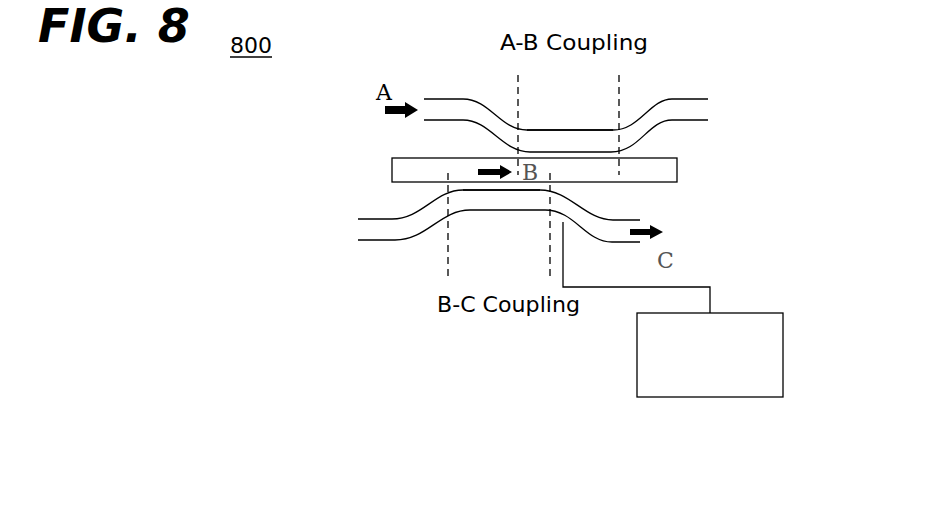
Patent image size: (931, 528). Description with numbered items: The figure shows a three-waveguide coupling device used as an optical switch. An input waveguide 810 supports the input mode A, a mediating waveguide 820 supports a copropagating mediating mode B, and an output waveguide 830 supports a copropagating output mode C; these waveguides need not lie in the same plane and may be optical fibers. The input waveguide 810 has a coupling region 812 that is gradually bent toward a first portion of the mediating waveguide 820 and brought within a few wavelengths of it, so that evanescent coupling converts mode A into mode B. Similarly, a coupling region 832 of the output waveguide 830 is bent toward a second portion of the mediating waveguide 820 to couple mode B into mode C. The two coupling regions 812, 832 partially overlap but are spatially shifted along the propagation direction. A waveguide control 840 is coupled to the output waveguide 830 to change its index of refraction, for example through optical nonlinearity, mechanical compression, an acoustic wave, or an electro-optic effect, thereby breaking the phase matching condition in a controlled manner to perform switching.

The input waveguide 810 is at (445, 100).
The coupling region 812 is at (563, 138).
The mediating waveguide 820 is at (677, 165).
The output waveguide 830 is at (381, 242).
The coupling region 832 is at (488, 203).
The waveguide control 840 is at (745, 313).